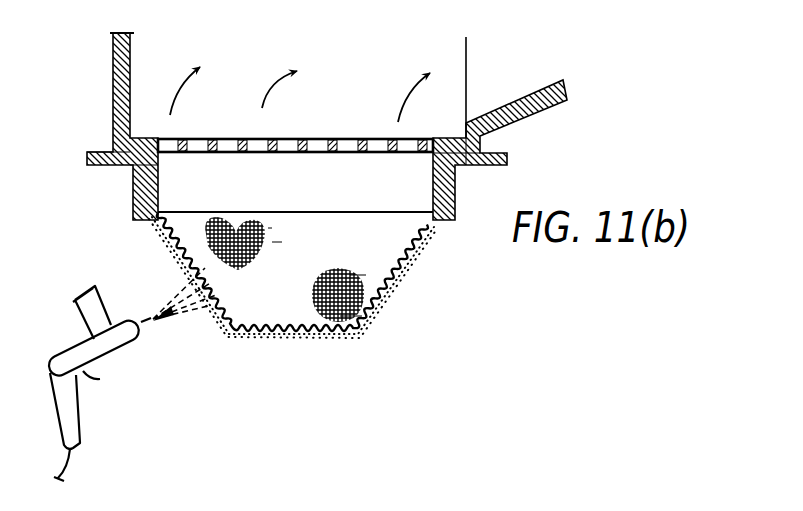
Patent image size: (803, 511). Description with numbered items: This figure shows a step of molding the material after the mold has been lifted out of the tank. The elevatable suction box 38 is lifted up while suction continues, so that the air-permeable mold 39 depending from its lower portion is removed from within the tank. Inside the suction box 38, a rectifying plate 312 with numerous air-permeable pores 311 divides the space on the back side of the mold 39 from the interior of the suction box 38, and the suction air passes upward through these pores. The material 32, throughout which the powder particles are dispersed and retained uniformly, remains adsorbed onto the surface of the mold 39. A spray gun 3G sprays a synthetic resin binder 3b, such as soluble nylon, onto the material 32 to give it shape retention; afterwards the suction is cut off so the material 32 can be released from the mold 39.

The suction box 38 is at (113, 92).
The rectifying plate 312 is at (243, 138).
The air-permeable pores 311 is at (370, 138).
The air-permeable mold 39 is at (388, 287).
The material 32 is at (323, 333).
The synthetic resin binder 3b is at (190, 297).
The spray gun 3G is at (127, 338).